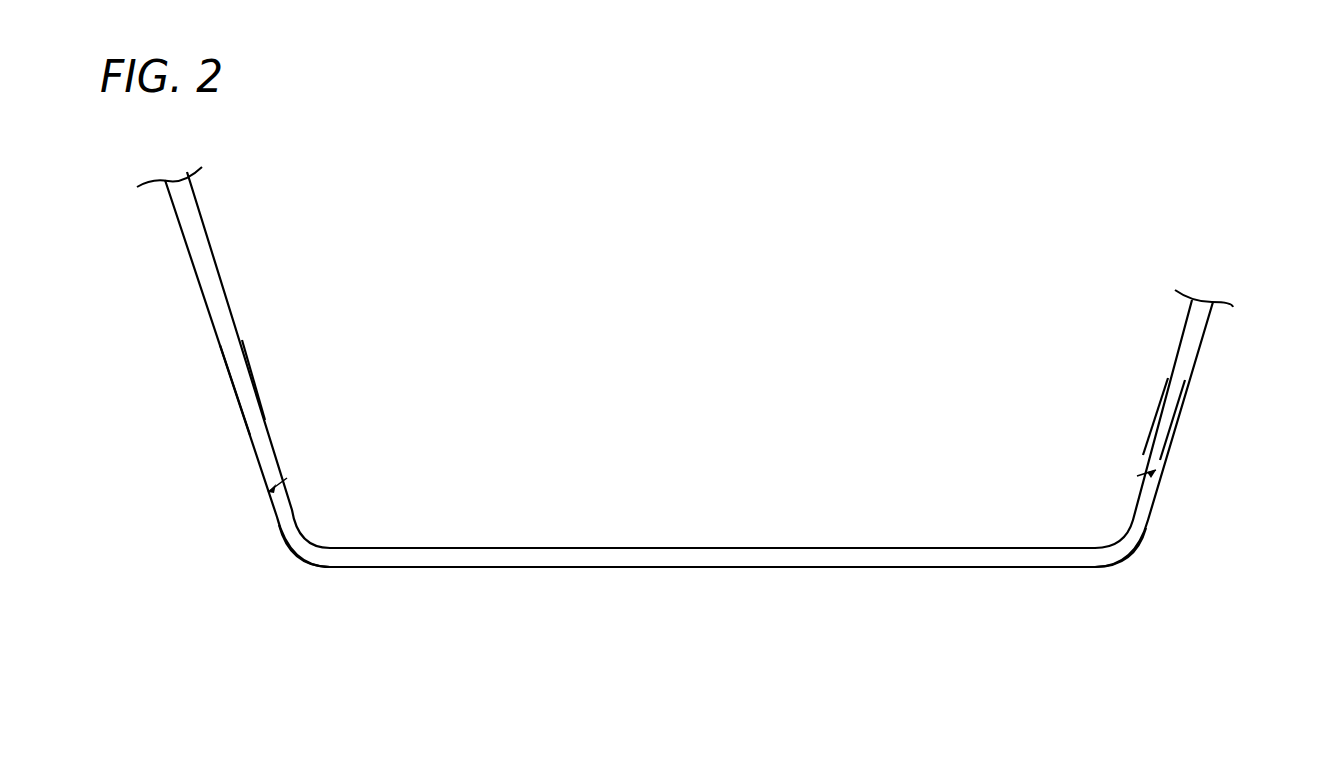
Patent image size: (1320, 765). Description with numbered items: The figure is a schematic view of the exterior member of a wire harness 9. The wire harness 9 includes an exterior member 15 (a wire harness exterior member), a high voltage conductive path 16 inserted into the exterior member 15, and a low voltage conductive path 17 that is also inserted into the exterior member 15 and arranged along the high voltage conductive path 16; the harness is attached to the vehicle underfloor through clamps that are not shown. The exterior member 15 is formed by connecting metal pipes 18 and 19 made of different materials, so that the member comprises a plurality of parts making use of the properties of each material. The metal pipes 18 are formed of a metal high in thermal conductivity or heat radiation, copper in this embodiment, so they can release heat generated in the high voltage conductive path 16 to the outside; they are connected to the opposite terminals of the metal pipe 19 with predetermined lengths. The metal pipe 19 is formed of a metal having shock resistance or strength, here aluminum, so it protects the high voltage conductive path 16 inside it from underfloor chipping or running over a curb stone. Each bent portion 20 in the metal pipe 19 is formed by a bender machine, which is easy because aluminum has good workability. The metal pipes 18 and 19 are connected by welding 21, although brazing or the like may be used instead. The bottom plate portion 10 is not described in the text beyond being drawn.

The wire harness 9 is at (876, 338).
The bottom plate portion 10 is at (717, 547).
The exterior member 15 is at (516, 548).
The high voltage conductive path 16 is at (808, 555).
The low voltage conductive path 17 is at (977, 557).
The metal pipes 18 is at (210, 286).
The metal pipe 19 is at (667, 567).
The bent portion 20 is at (313, 565).
The welding 21 is at (272, 497).